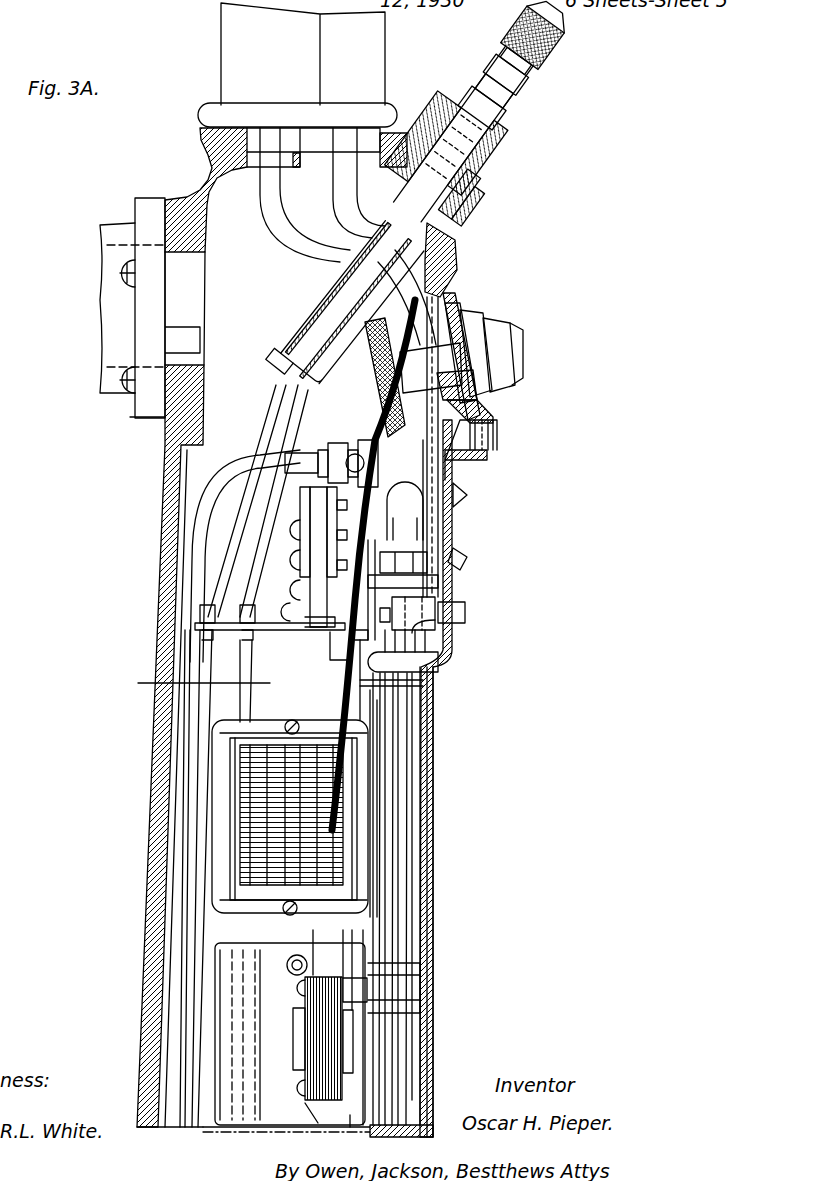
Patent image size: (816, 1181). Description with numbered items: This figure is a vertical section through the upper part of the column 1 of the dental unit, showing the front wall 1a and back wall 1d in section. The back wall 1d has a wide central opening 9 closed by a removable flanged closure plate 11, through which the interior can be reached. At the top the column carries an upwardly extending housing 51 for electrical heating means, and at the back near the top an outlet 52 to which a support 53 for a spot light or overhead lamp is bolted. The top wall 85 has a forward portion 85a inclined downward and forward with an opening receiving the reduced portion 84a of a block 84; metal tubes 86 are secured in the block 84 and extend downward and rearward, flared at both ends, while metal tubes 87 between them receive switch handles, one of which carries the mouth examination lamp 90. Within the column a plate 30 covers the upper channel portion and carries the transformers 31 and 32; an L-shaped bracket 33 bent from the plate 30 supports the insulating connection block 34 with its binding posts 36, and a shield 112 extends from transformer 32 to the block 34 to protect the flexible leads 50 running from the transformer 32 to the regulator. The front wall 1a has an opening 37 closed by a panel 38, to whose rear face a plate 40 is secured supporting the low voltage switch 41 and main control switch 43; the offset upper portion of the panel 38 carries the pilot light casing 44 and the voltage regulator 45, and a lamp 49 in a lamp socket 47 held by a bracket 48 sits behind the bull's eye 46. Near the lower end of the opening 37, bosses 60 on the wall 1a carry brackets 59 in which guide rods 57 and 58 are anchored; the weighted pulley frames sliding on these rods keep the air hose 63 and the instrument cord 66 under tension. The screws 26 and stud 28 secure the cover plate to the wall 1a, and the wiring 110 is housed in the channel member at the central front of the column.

The column 1 is at (455, 905).
The front wall 1a is at (437, 855).
The back wall 1d is at (172, 435).
The opening 9 is at (180, 496).
The closure plate 11 is at (158, 775).
The screws 26 is at (355, 1132).
The stud 28 is at (402, 1132).
The plate 30 is at (380, 785).
The transformer 31 is at (305, 1030).
The transformer 32 is at (220, 840).
The L-shaped bracket 33 is at (330, 645).
The connection block 34 is at (335, 443).
The binding posts 36 is at (300, 557).
The opening 37 is at (455, 300).
The panel 38 is at (440, 275).
The plate 40 is at (438, 580).
The switch 41 is at (423, 540).
The switch 43 is at (445, 660).
The socket or casing 44 is at (487, 452).
The voltage regulator 45 is at (490, 320).
The bull's eye 46 is at (467, 490).
The lamp socket 47 is at (455, 555).
The bracket 48 is at (447, 600).
The lamp 49 is at (415, 505).
The flexible leads 50 is at (375, 683).
The housing 51 is at (221, 33).
The outlet 52 is at (172, 200).
The support 53 is at (120, 395).
The rods 57 is at (195, 650).
The rods 58 is at (240, 607).
The brackets 59 is at (195, 625).
The bosses 60 is at (466, 613).
The air hose 63 is at (240, 557).
The cord 66 is at (275, 437).
The block 84 is at (482, 152).
The reduced portion 84a is at (478, 182).
The top wall 85 is at (392, 122).
The forward portion 85a is at (480, 205).
The metal tubes 86 is at (292, 322).
The metal tubes 87 is at (268, 358).
The mouth examination lamp 90 is at (542, 52).
The wiring 110 is at (424, 819).
The shield 112 is at (188, 682).